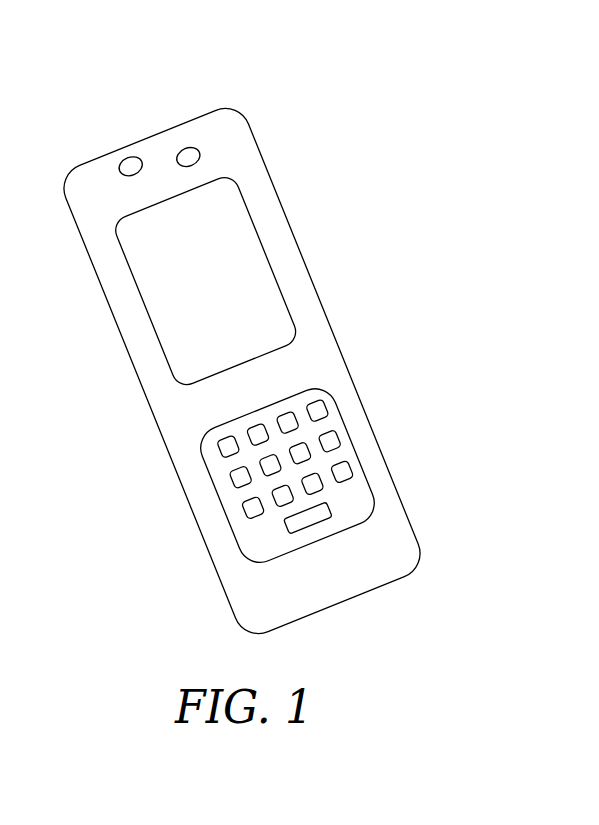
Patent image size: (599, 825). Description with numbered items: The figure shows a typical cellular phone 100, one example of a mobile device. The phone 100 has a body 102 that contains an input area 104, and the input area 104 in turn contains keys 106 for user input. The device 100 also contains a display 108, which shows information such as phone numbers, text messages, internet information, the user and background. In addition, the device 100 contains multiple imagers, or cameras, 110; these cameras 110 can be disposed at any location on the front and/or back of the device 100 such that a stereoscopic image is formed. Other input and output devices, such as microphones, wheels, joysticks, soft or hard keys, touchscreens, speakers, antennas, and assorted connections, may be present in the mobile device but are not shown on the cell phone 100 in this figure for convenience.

The cellular phone 100 is at (414, 59).
The body 102 is at (233, 113).
The input area 104 is at (353, 440).
The keys 106 is at (323, 403).
The display 108 is at (268, 262).
The imagers 110 is at (185, 147).